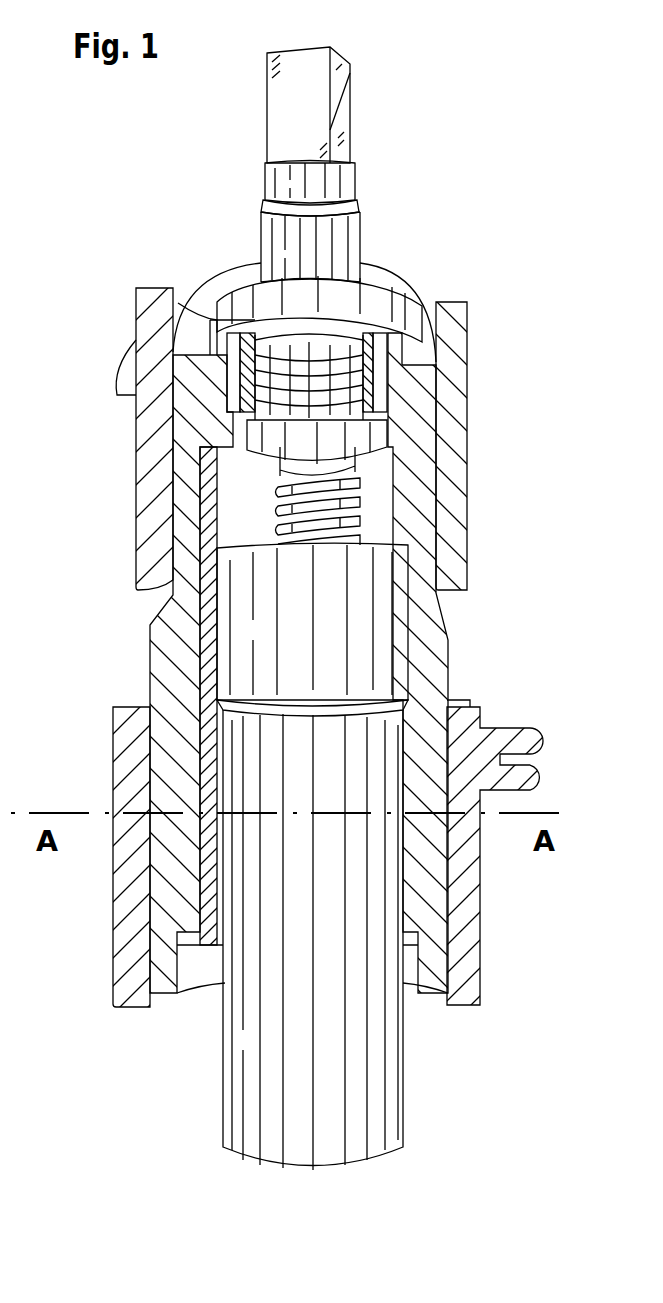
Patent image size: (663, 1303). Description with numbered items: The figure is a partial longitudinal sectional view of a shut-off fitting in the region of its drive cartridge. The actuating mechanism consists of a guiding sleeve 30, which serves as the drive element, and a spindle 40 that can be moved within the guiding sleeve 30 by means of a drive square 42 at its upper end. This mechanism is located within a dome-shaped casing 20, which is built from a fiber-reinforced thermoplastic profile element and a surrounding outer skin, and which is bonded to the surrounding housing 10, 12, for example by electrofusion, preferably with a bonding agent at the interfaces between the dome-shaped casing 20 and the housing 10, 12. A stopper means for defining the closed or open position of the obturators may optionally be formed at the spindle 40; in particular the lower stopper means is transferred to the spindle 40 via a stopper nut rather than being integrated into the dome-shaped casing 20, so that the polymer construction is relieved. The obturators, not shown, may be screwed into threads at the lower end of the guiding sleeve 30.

The housing 10 is at (462, 928).
The housing 12 is at (453, 424).
The dome-shaped casing 20 is at (427, 661).
The guiding sleeve 30 is at (353, 1107).
The spindle 40 is at (358, 511).
The drive square 42 is at (314, 107).